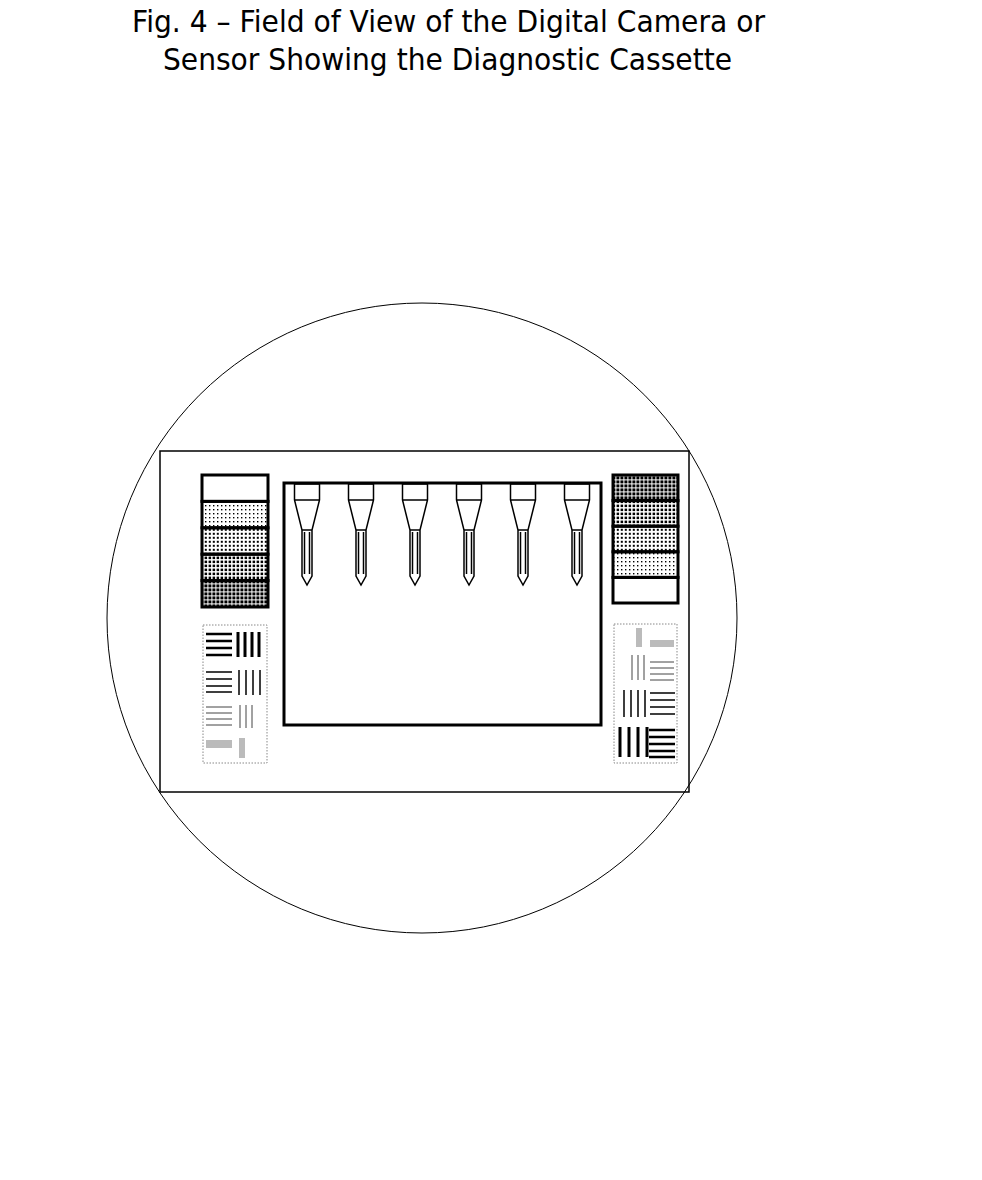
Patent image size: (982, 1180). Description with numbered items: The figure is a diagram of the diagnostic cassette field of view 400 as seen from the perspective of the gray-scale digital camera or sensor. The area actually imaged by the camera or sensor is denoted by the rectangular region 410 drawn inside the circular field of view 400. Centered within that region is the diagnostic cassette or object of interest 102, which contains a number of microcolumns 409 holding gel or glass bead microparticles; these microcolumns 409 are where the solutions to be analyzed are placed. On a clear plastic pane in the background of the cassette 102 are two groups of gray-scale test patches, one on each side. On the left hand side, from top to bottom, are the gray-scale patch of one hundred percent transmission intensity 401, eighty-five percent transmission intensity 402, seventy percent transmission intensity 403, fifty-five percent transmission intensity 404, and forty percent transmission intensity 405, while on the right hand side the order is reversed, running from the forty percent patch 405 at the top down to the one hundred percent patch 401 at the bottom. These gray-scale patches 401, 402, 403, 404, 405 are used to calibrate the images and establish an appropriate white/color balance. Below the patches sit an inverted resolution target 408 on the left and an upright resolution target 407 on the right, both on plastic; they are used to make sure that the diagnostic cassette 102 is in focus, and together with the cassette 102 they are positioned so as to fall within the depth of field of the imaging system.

The diagnostic cassette field of view 400 is at (412, 932).
The rectangular region 410 is at (572, 792).
The diagnostic cassette or object of interest 102 is at (598, 485).
The microcolumns 409 is at (577, 586).
The gray-scale patch of 100% transmission intensity 401 is at (202, 478).
The gray-scale patch of 85% transmission intensity 402 is at (202, 505).
The gray-scale patch of 70% transmission intensity 403 is at (202, 533).
The gray-scale patch of 55% transmission intensity 404 is at (202, 563).
The gray-scale patch of 40% transmission intensity 405 is at (202, 587).
The inverted resolution target 408 is at (203, 697).
The upright resolution target 407 is at (678, 687).